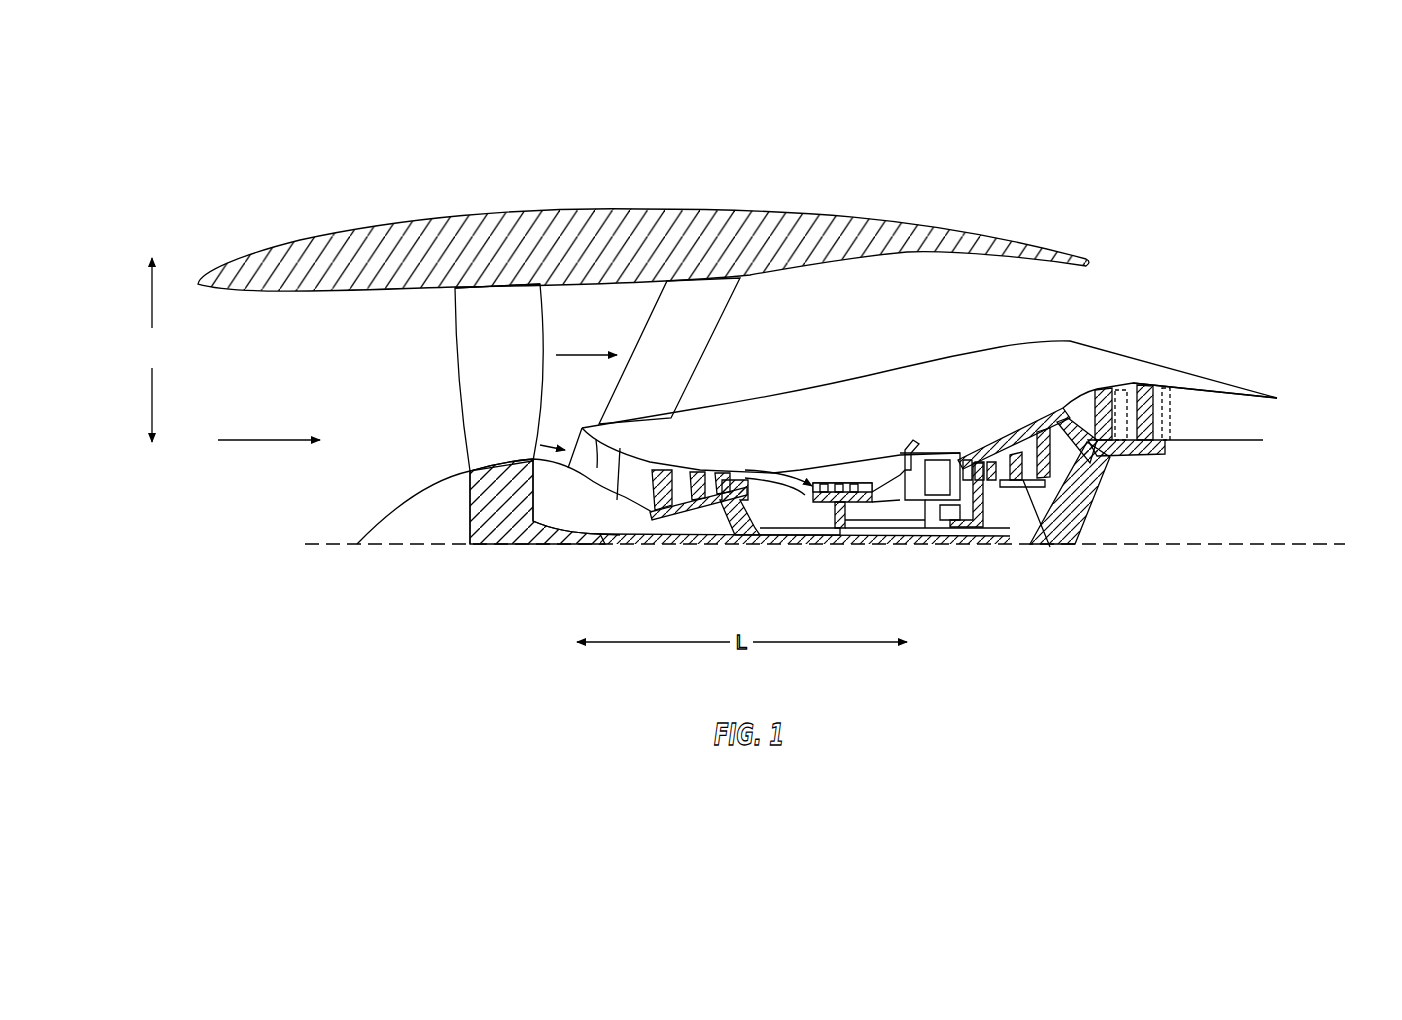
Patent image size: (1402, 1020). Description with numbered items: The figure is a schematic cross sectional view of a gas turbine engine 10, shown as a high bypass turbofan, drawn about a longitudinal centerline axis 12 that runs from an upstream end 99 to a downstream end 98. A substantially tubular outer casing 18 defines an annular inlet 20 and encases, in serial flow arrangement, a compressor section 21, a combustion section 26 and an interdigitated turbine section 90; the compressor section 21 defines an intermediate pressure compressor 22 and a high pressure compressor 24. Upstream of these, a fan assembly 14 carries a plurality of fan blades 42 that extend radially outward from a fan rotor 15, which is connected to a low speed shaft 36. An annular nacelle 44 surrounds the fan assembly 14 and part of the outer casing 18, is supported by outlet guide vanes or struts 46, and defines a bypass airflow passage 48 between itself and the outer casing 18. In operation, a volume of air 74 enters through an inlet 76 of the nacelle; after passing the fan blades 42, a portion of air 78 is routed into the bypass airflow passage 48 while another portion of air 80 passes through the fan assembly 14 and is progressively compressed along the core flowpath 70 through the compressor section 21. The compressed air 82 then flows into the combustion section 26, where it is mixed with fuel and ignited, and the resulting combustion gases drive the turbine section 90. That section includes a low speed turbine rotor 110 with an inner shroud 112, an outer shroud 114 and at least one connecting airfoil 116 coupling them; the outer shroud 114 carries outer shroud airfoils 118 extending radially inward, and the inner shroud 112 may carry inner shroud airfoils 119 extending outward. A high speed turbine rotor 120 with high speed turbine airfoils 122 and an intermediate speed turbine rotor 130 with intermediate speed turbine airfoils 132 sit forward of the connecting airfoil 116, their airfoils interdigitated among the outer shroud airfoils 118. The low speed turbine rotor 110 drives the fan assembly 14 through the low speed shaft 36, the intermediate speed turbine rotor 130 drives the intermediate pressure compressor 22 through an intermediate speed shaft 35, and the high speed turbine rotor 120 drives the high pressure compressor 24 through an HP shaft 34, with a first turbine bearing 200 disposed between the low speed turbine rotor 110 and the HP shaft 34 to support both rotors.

The gas turbine engine 10 is at (1165, 168).
The axial centerline axis 12 is at (1285, 543).
The fan assembly 14 is at (437, 403).
The fan rotor 15 is at (472, 500).
The outer casing 18 is at (845, 398).
The annular inlet 20 is at (578, 437).
The compressor section 21 is at (748, 440).
The intermediate pressure compressor 22 is at (660, 470).
The high pressure compressor 24 is at (820, 488).
The combustion section 26 is at (940, 437).
The HP shaft 34 is at (830, 525).
The intermediate speed shaft 35 is at (735, 520).
The low speed shaft 36 is at (563, 542).
The fan blades 42 is at (465, 338).
The nacelle 44 is at (412, 230).
The outlet guide vanes or struts 46 is at (657, 358).
The bypass airflow passage 48 is at (767, 336).
The core flowpath 70 is at (598, 473).
The volume of air 74 is at (277, 442).
The inlet 76 is at (312, 368).
The bypass air 78 is at (565, 355).
The core air 80 is at (548, 458).
The compressed air 82 is at (770, 478).
The turbine section 90 is at (1094, 350).
The downstream end 98 is at (1363, 457).
The upstream end 99 is at (145, 524).
The low speed turbine rotor 110 is at (1075, 512).
The inner shroud 112 is at (1150, 452).
The outer shroud 114 is at (1045, 413).
The connecting airfoil 116 is at (1073, 425).
The outer shroud airfoils 118 is at (948, 530).
The inner shroud airfoils 119 is at (1140, 393).
The high speed turbine rotor 120 is at (968, 460).
The high speed turbine airfoils 122 is at (975, 448).
The intermediate speed turbine rotor 130 is at (1015, 520).
The intermediate speed turbine airfoils 132 is at (1040, 475).
The first turbine bearing 200 is at (920, 538).